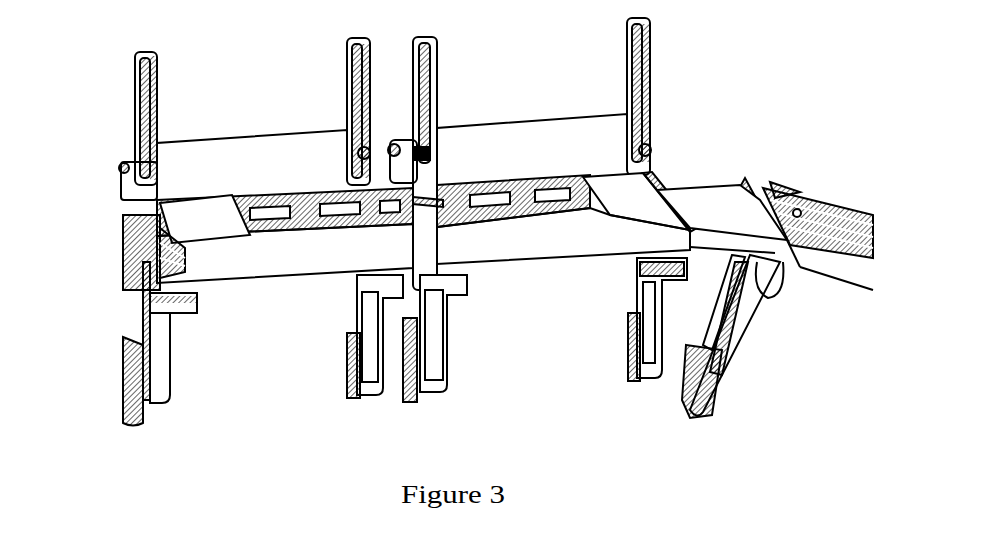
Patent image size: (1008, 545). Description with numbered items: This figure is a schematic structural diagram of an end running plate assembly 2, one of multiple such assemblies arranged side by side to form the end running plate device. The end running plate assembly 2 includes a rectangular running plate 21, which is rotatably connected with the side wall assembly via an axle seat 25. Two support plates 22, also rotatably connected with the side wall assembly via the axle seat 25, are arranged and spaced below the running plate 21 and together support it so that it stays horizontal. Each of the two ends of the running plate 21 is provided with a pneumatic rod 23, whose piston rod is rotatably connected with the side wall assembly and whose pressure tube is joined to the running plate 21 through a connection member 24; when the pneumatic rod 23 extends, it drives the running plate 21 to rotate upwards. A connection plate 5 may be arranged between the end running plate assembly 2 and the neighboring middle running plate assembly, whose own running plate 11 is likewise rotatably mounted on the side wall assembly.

The end running plate assembly 2 is at (523, 122).
The connection plate 5 is at (695, 198).
The running plate 11 is at (838, 225).
The running plate 21 is at (508, 248).
The support plate 22 is at (160, 343).
The pneumatic rod 23 is at (140, 106).
The connection member 24 is at (153, 62).
The axle seat 25 is at (123, 350).